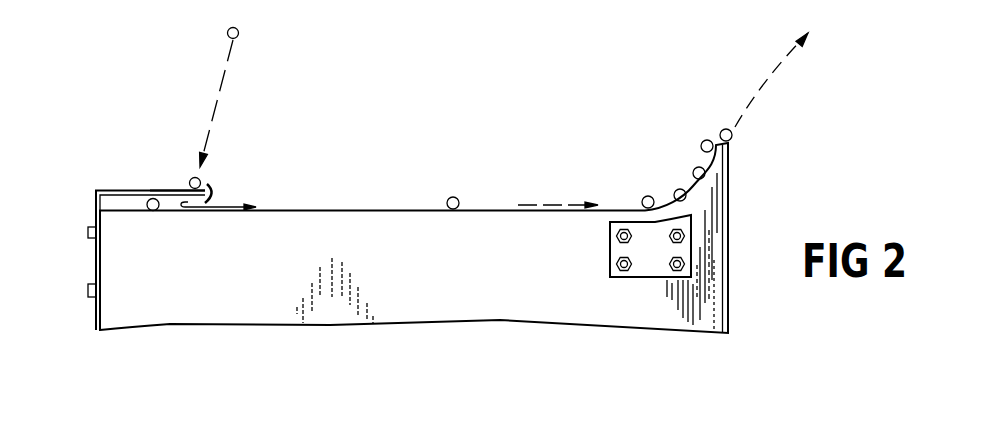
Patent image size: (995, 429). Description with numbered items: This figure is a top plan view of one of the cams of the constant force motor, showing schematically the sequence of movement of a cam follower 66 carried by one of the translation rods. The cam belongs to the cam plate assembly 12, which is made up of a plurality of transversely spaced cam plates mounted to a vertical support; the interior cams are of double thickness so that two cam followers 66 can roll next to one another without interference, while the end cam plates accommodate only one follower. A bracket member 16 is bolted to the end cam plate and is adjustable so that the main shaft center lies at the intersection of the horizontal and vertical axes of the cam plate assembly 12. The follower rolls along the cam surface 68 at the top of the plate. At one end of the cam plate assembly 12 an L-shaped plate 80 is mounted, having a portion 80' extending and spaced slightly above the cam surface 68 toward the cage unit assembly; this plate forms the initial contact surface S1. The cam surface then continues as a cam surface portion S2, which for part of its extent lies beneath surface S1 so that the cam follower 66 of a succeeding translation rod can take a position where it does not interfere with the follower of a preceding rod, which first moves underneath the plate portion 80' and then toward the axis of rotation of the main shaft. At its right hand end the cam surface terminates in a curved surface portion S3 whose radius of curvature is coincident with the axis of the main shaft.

The cam plate assembly 12 is at (702, 303).
The bracket member 16 is at (643, 268).
The cam follower 66 is at (237, 36).
The cam surface 68 is at (392, 210).
The L-shaped plate 80 is at (138, 257).
The plate portion 80' is at (177, 176).
The initial contact surface S1 is at (123, 189).
The cam surface portion S2 is at (333, 210).
The curved surface portion S3 is at (690, 186).